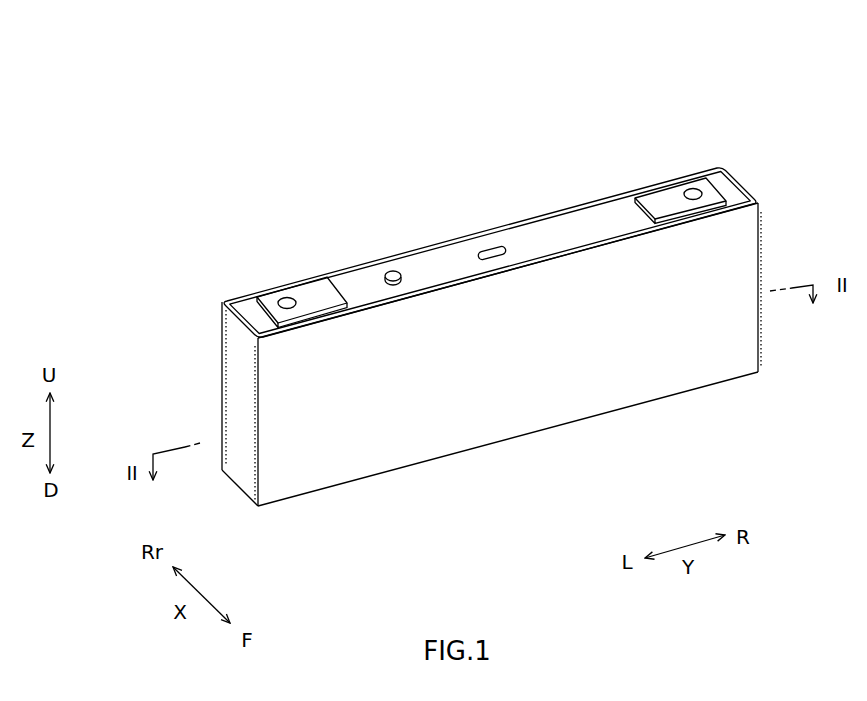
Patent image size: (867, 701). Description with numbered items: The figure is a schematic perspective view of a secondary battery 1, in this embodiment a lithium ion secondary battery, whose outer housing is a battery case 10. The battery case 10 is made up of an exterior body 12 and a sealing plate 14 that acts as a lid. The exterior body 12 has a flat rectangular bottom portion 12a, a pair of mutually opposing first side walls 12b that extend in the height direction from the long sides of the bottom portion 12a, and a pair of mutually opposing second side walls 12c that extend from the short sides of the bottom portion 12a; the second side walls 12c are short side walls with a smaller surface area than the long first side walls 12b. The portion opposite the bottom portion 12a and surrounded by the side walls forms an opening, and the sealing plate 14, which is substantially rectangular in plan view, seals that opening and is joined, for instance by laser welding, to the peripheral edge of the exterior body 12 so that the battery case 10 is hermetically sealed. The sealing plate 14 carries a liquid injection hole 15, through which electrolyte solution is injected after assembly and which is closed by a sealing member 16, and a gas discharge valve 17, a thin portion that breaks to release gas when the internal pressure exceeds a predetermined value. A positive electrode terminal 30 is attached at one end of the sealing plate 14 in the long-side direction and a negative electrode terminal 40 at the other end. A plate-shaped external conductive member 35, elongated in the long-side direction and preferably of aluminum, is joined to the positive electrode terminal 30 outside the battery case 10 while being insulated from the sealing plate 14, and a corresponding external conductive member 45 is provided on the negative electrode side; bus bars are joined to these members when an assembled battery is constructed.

The secondary battery 1 is at (670, 86).
The battery case 10 is at (550, 146).
The exterior body 12 is at (605, 278).
The bottom portion 12a is at (467, 447).
The first side wall 12b is at (463, 237).
The second side wall 12c is at (762, 352).
The sealing plate 14 is at (558, 232).
The liquid injection hole 15 is at (400, 272).
The sealing member 16 is at (392, 268).
The gas discharge valve 17 is at (493, 243).
The positive electrode terminal 30 is at (285, 292).
The external conductive member 35 is at (318, 293).
The negative electrode terminal 40 is at (686, 186).
The external conductive member 45 is at (658, 198).